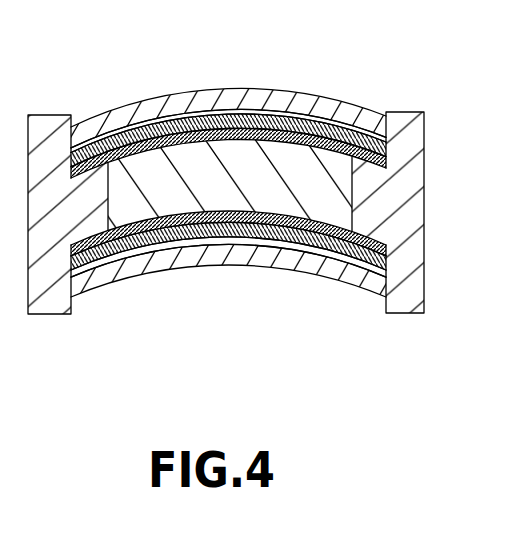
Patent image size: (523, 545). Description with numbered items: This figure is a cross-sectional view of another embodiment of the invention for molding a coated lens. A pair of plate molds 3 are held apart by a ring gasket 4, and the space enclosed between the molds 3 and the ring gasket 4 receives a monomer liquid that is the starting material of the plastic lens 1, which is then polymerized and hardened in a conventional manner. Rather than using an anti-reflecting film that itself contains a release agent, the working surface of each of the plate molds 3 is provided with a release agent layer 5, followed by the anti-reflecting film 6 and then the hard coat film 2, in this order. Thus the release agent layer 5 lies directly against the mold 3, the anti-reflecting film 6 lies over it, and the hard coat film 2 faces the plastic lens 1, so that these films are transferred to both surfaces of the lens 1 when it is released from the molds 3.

The plastic lens 1 is at (348, 118).
The hard coat film 2 is at (306, 119).
The plate molds 3 is at (123, 104).
The ring gasket 4 is at (407, 231).
The release agent layer 5 is at (187, 108).
The anti-reflecting film 6 is at (241, 113).